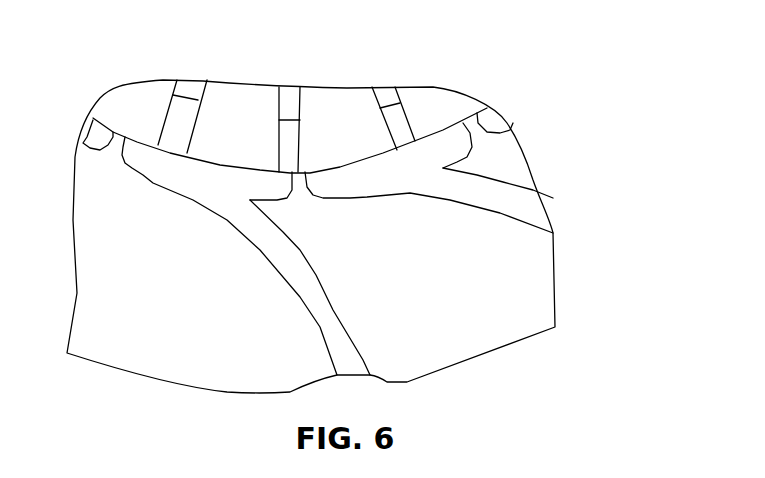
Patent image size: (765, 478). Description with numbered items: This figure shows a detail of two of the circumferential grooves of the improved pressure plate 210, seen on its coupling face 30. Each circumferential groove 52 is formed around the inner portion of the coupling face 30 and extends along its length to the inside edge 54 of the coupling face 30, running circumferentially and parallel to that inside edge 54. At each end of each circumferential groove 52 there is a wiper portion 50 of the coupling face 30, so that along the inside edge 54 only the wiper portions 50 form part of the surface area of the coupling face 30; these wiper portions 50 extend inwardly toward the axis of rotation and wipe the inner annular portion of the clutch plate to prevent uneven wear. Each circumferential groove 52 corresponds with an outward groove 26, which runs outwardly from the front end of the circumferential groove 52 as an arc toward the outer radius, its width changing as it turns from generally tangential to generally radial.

The outward groove 26 is at (507, 197).
The coupling face 30 is at (450, 330).
The wiper portion 50 is at (133, 122).
The circumferential groove 52 is at (440, 150).
The inside edge 54 is at (338, 162).
The pressure plate 210 is at (520, 297).